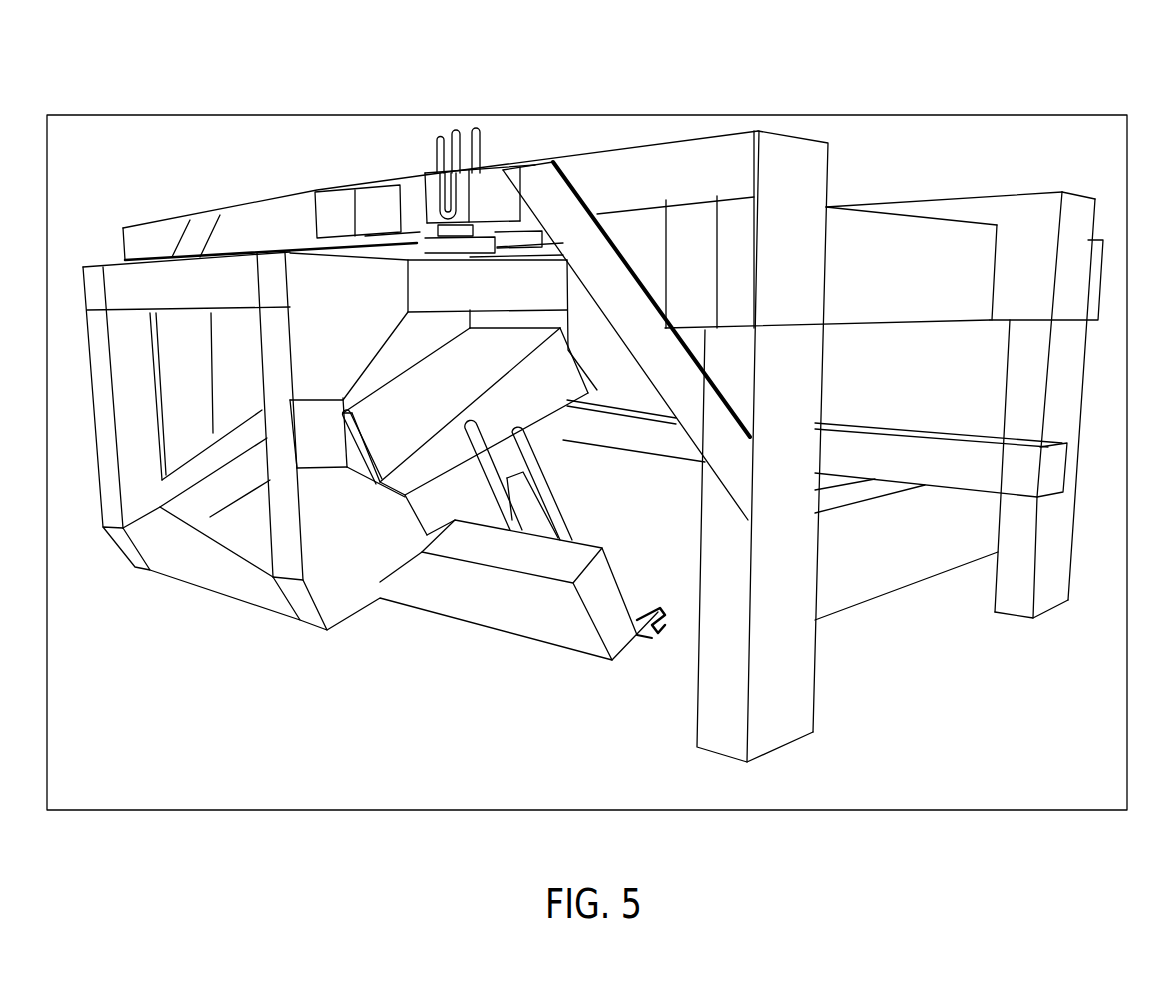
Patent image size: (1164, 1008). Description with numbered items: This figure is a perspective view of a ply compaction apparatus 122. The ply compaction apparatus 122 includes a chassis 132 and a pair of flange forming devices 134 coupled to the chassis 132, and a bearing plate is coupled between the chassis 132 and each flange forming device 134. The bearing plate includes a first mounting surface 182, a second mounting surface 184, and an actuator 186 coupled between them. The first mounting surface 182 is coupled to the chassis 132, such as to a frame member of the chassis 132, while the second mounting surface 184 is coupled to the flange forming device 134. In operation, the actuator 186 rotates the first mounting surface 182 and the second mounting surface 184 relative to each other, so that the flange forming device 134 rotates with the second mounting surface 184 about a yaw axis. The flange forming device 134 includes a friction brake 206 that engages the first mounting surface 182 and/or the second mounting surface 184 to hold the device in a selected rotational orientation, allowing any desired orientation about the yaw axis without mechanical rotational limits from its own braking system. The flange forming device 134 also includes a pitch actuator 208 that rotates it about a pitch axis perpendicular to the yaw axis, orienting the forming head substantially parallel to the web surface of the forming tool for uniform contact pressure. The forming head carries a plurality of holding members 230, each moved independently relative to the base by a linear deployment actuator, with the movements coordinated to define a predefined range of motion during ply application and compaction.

The ply compaction apparatus 122 is at (815, 86).
The chassis 132 is at (962, 164).
The flange forming device 134 is at (259, 236).
The actuator 186 is at (328, 242).
The pitch actuator 208 is at (377, 197).
The first mounting surface 182 is at (389, 237).
The friction brake 206 is at (463, 192).
The second mounting surface 184 is at (548, 253).
The holding member 230 is at (651, 637).